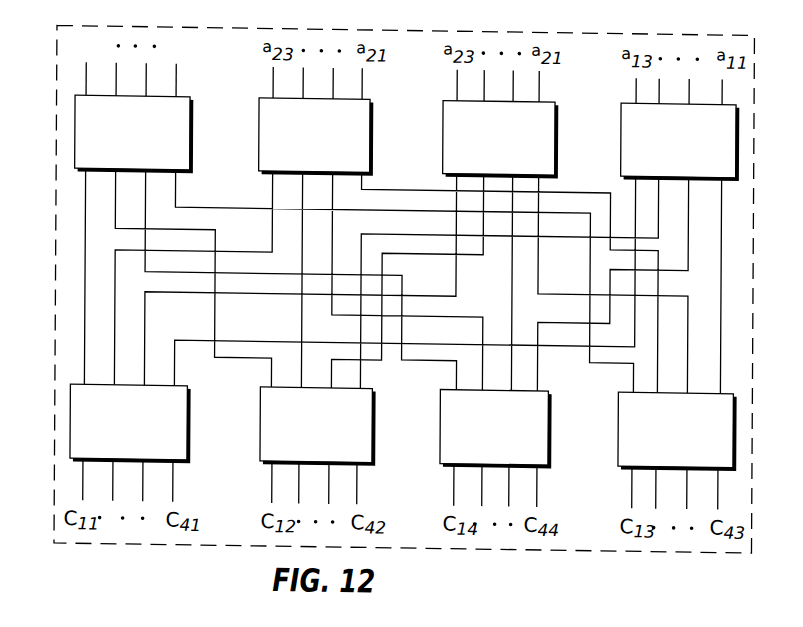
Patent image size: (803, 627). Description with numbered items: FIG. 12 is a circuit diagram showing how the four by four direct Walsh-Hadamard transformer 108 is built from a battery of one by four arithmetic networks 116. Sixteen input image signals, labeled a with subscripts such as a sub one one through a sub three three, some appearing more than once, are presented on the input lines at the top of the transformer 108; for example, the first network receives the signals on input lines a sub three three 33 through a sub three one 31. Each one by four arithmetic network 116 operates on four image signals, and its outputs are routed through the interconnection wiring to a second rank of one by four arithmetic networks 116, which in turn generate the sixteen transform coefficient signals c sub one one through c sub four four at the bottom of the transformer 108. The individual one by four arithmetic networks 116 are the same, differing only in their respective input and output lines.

The direct Walsh-Hadamard transformer 108 is at (56, 83).
The 1 by 4 arithmetic network 116 is at (74, 128).
The input line a33 33 is at (87, 63).
The input line a31 31 is at (185, 65).